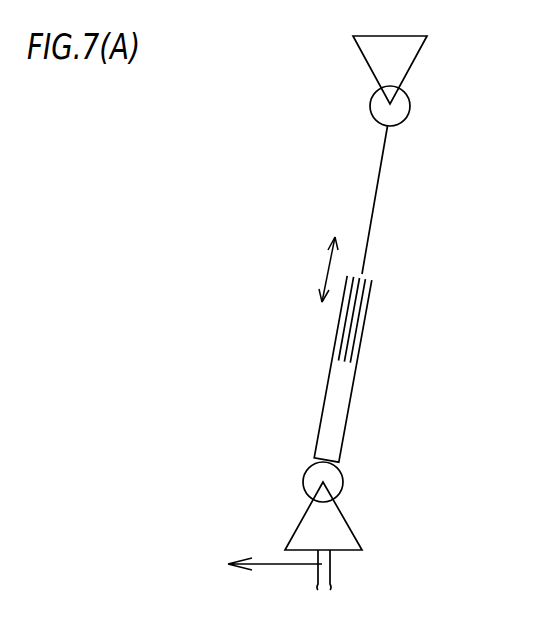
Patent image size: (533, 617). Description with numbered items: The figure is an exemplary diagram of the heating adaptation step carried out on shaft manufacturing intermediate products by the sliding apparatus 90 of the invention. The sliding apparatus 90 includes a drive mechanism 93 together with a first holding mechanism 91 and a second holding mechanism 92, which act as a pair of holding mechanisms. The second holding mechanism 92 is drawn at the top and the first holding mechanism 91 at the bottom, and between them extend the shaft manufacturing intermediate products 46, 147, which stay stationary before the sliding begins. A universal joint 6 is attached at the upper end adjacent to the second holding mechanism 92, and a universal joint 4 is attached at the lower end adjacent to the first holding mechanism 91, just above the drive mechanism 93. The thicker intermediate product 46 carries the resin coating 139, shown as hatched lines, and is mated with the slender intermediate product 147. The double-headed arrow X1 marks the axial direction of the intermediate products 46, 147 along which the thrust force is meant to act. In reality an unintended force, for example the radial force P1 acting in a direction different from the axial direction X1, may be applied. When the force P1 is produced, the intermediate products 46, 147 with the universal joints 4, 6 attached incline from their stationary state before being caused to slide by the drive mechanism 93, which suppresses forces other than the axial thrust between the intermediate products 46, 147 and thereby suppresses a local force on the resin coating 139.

The sliding apparatus 90 is at (430, 57).
The second holding mechanism 92 is at (390, 73).
The universal joint 6 is at (411, 106).
The shaft manufacturing intermediate product 147 is at (372, 212).
The axial direction X1 is at (327, 272).
The shaft manufacturing intermediate product 46 is at (350, 412).
The resin coating 139 is at (360, 318).
The universal joint 4 is at (344, 482).
The first holding mechanism 91 is at (342, 527).
The drive mechanism 93 is at (325, 573).
The radial force P1 is at (268, 563).